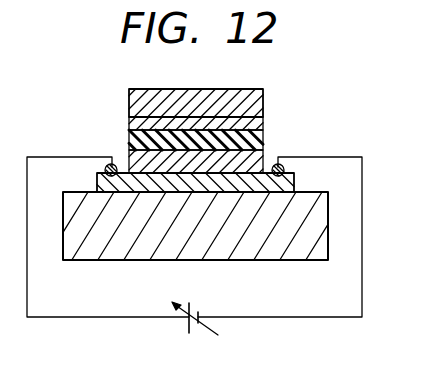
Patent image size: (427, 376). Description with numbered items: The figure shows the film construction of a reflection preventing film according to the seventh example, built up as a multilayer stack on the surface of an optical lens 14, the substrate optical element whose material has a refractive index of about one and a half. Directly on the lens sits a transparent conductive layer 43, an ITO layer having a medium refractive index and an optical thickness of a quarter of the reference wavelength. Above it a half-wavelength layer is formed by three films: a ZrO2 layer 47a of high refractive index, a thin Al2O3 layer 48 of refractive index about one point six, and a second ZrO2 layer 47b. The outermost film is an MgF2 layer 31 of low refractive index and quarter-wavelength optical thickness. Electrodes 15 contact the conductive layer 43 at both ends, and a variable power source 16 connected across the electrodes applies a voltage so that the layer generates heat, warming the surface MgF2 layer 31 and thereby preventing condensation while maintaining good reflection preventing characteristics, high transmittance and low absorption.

The MgF2 layer 31 is at (263, 103).
The ZrO2 layer 47a is at (128, 115).
The Al2O3 layer 48 is at (128, 135).
The ZrO2 layer 47b is at (128, 154).
The electrode layer 43 is at (295, 178).
The optical lens 14 is at (322, 223).
The electrodes 15 is at (106, 170).
The variable power source 16 is at (187, 321).